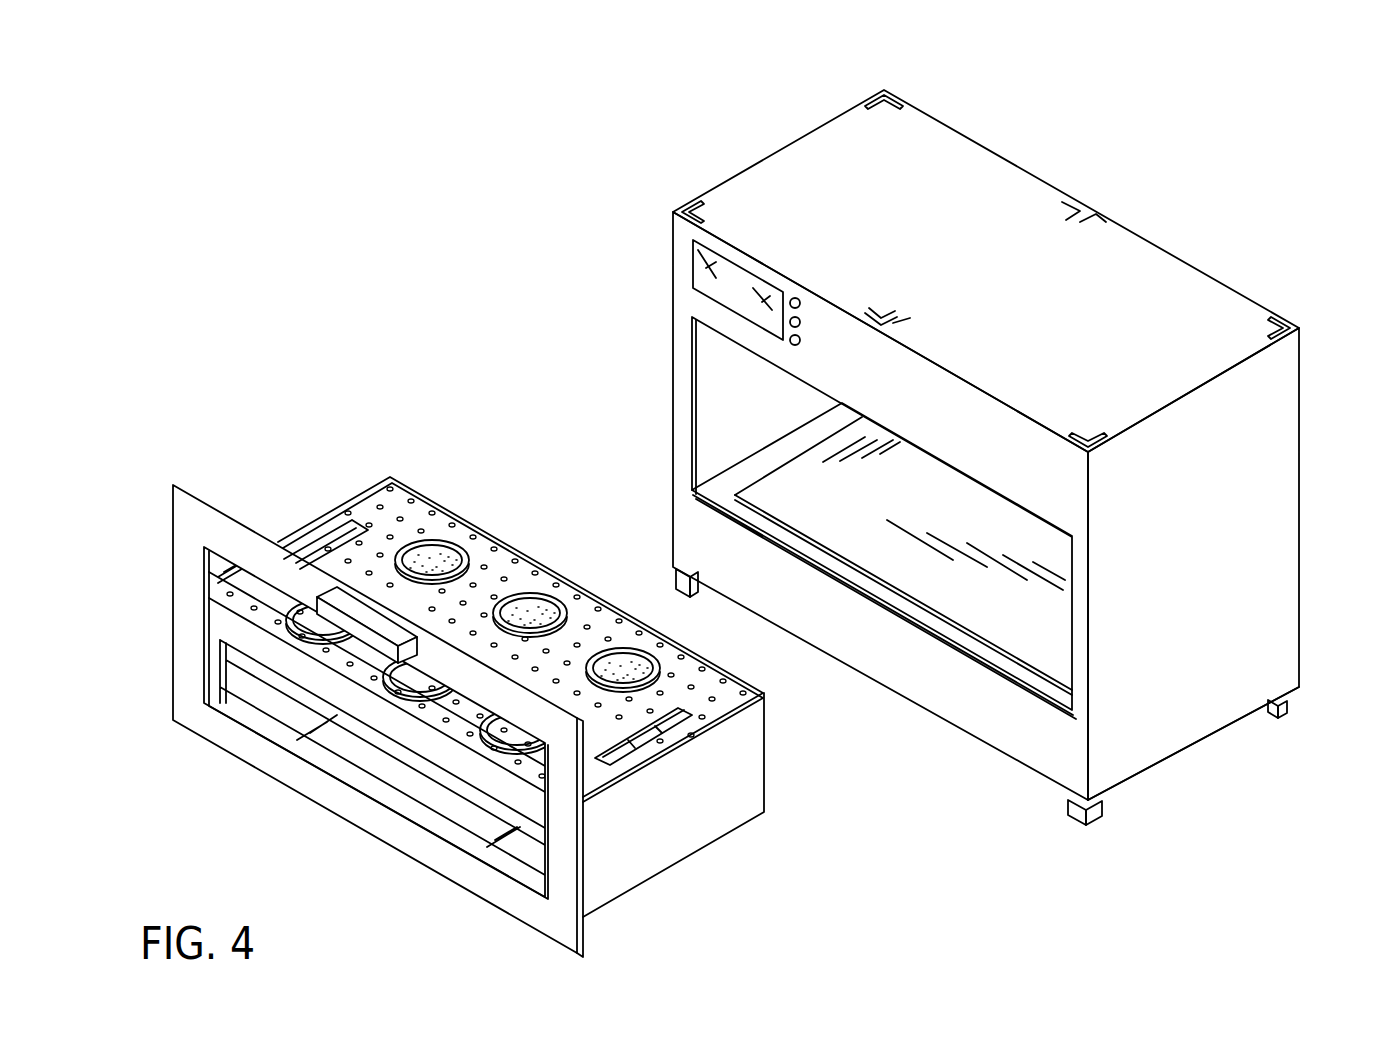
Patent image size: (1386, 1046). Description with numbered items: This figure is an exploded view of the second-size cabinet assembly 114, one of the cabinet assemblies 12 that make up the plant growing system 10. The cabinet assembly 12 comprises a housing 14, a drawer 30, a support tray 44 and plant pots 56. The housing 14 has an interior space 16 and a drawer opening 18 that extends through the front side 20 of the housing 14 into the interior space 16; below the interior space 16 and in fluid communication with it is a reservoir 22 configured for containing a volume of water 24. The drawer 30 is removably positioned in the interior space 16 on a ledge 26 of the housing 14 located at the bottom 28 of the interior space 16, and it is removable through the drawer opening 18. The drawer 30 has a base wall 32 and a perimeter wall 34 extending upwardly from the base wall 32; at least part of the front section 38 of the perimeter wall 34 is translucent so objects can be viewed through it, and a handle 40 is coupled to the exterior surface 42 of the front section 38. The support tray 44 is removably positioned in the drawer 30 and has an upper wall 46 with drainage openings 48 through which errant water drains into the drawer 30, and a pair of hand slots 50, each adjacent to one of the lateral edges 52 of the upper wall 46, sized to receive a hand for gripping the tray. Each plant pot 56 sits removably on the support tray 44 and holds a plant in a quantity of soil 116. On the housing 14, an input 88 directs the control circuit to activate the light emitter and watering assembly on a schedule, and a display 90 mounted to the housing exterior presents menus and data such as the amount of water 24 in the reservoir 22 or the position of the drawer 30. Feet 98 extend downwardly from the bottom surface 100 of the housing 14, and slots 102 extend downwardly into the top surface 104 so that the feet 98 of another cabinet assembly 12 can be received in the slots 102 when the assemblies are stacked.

The plant growing system 10 is at (402, 212).
The cabinet assembly 12 is at (1023, 456).
The housing 14 is at (994, 270).
The interior space 16 is at (867, 602).
The drawer opening 18 is at (823, 594).
The front side 20 is at (1015, 452).
The reservoir 22 is at (903, 614).
The volume of water 24 is at (1040, 602).
The ledge 26 is at (1003, 603).
The bottom 28 is at (1048, 662).
The drawer 30 is at (492, 660).
The base wall 32 is at (699, 811).
The perimeter wall 34 is at (750, 780).
The front section 38 is at (365, 750).
The handle 40 is at (353, 623).
The exterior surface 42 is at (355, 683).
The support tray 44 is at (521, 625).
The upper wall 46 is at (567, 605).
The drainage opening 48 is at (392, 567).
The hand slot 50 is at (519, 649).
The lateral edge 52 is at (288, 533).
The plant pot 56 is at (598, 532).
The input 88 is at (698, 242).
The display 90 is at (680, 290).
The foot 98 is at (1097, 810).
The bottom surface 100 is at (1200, 745).
The slot 102 is at (880, 317).
The top surface 104 is at (942, 170).
The second-size cabinet assembly 114 is at (1315, 613).
The soil 116 is at (433, 560).